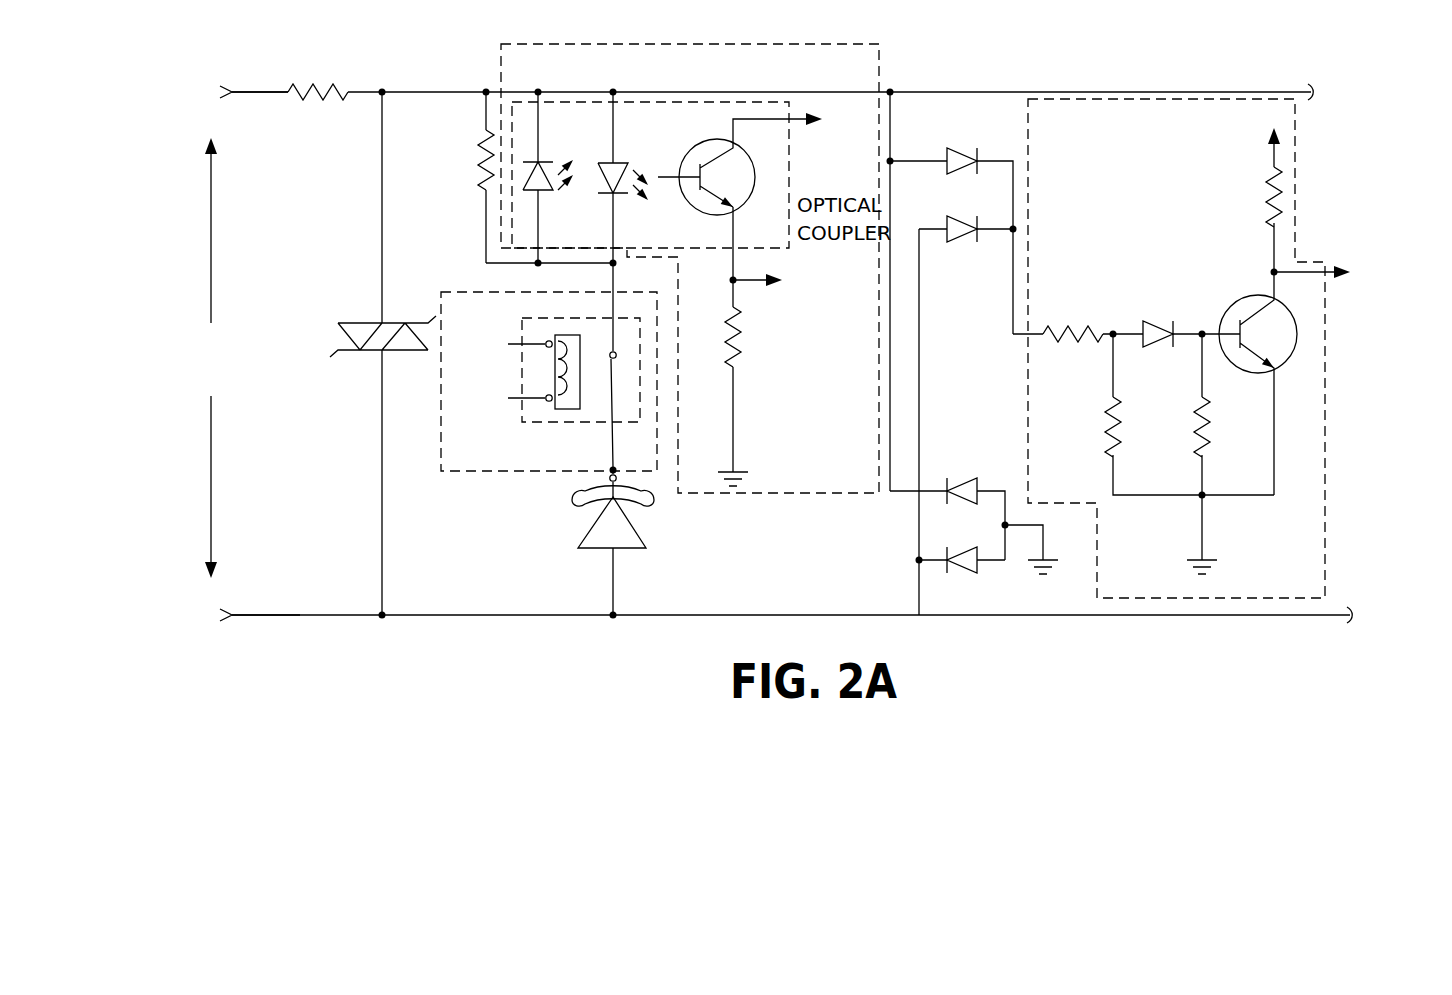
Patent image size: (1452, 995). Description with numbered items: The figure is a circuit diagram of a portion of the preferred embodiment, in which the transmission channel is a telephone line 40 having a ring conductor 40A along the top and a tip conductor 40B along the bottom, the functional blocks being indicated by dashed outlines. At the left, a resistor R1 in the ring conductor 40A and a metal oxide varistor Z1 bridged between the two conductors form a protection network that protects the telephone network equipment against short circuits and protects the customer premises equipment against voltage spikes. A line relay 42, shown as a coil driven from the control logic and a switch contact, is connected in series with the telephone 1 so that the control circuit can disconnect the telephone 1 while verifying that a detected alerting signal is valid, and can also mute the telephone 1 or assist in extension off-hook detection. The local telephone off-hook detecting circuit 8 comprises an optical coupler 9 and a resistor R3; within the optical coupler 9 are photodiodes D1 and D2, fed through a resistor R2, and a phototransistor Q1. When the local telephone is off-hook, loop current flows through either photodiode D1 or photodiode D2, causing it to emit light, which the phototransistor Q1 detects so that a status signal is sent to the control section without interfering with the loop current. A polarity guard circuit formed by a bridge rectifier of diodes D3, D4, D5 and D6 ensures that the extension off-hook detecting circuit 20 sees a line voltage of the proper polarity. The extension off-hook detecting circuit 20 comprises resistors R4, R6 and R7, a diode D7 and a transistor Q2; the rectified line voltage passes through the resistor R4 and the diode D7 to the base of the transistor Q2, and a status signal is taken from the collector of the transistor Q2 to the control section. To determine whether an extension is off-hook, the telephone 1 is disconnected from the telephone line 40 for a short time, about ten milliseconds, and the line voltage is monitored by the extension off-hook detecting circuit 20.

The ring conductor 40A is at (257, 92).
The tip conductor 40B is at (319, 615).
The telephone line 40 is at (166, 331).
The resistor R1 is at (318, 80).
The metal oxide varistor Z1 is at (369, 336).
The local telephone off-hook detecting circuit 8 is at (883, 66).
The optical coupler 9 is at (690, 96).
The resistor R2 is at (470, 176).
The photodiode D1 is at (549, 176).
The photodiode D2 is at (624, 176).
The phototransistor Q1 is at (764, 171).
The resistor R3 is at (783, 346).
The line relay 42 is at (519, 331).
The telephone 1 is at (637, 530).
The diode D3 is at (950, 227).
The diode D4 is at (968, 216).
The diode D5 is at (974, 511).
The diode D6 is at (961, 548).
The diode D7 is at (1191, 322).
The extension off-hook detecting circuit 20 is at (1106, 101).
The resistor R4 is at (1078, 319).
The resistor R6 is at (1170, 414).
The resistor R7 is at (1223, 339).
The transistor Q2 is at (1335, 380).